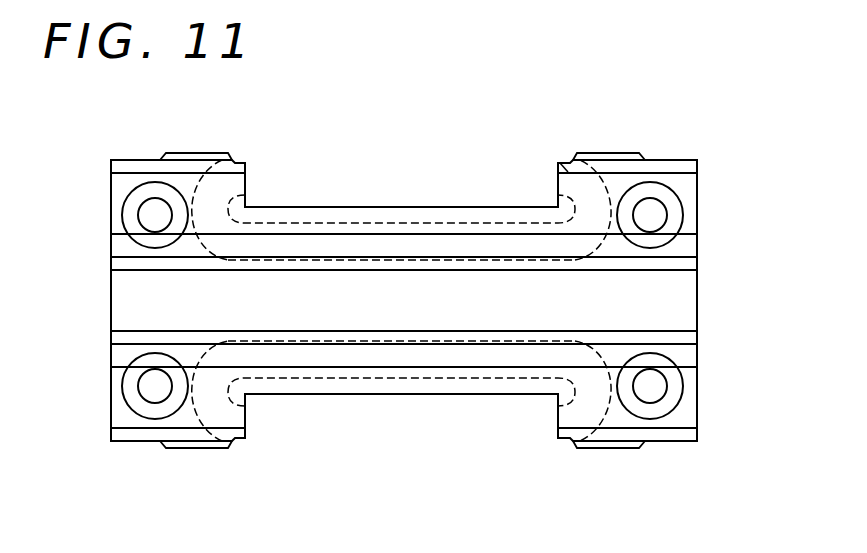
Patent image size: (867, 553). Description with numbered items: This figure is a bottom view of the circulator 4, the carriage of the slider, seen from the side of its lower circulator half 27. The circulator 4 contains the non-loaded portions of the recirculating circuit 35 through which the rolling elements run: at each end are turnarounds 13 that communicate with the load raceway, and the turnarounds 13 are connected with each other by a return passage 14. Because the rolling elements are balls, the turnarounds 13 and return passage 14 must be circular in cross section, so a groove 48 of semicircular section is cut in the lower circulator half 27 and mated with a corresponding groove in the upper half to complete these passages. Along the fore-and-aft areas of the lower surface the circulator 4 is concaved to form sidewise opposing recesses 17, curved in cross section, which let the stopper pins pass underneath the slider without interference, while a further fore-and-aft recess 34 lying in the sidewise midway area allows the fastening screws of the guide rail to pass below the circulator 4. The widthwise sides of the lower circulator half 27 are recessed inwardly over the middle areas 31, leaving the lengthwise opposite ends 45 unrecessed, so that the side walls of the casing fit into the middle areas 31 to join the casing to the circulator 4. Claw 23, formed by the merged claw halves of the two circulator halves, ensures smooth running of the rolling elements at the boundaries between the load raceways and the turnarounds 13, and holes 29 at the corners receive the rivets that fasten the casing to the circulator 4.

The circulator 4 is at (373, 193).
The turnarounds 13 is at (602, 418).
The return passage 14 is at (283, 243).
The fore-and-aft recess 17 is at (185, 190).
The claw 23 is at (232, 156).
The lower circulator half 27 is at (502, 225).
The holes 29 is at (148, 198).
The recessed middle areas 31 is at (447, 207).
The fore-and-aft recess 34 is at (342, 313).
The recirculating circuit 35 is at (323, 243).
The lengthwise opposite ends 45 is at (123, 304).
The groove 48 is at (410, 240).